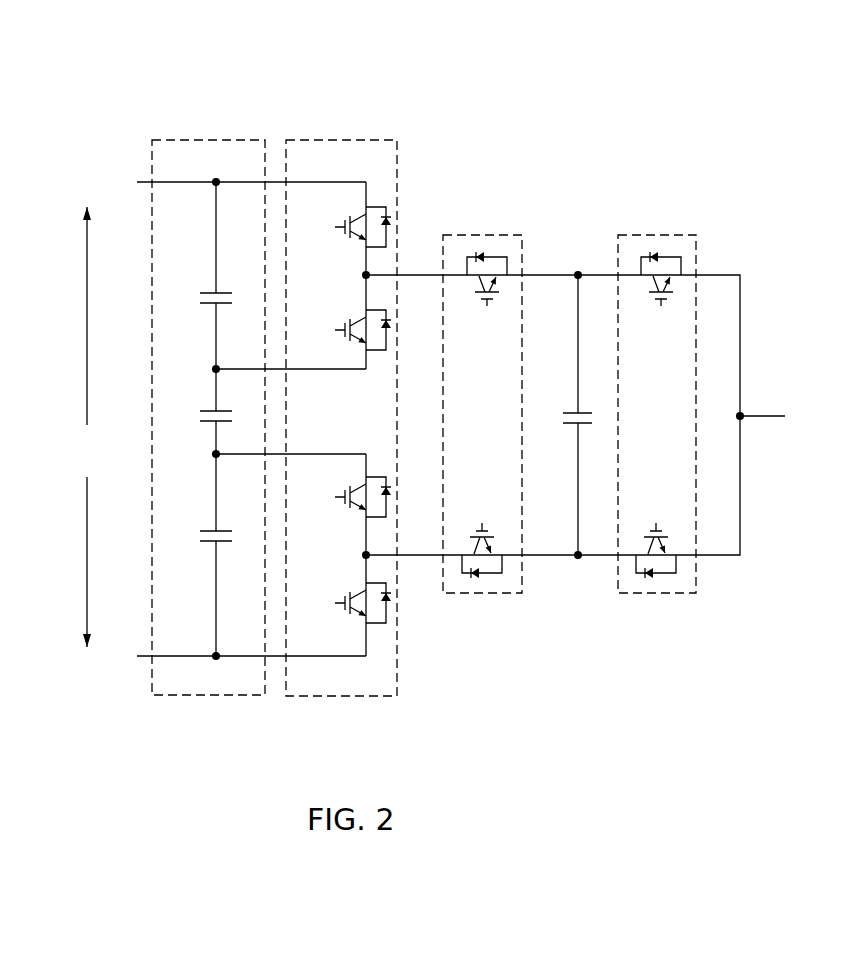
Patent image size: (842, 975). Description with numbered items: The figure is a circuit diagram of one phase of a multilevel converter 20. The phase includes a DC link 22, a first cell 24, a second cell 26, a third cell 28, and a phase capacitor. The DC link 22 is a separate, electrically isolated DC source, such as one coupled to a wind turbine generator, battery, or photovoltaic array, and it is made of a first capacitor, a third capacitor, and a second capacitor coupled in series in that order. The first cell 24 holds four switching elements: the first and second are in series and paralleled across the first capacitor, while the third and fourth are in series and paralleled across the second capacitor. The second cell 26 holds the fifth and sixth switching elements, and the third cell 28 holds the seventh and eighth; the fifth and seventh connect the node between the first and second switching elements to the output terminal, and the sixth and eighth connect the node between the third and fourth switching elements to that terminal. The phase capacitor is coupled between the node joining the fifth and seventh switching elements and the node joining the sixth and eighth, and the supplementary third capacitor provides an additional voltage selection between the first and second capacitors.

The multilevel converter 20 is at (525, 76).
The DC link 22 is at (208, 695).
The first cell 24 is at (342, 696).
The second cell 26 is at (478, 593).
The third cell 28 is at (662, 593).